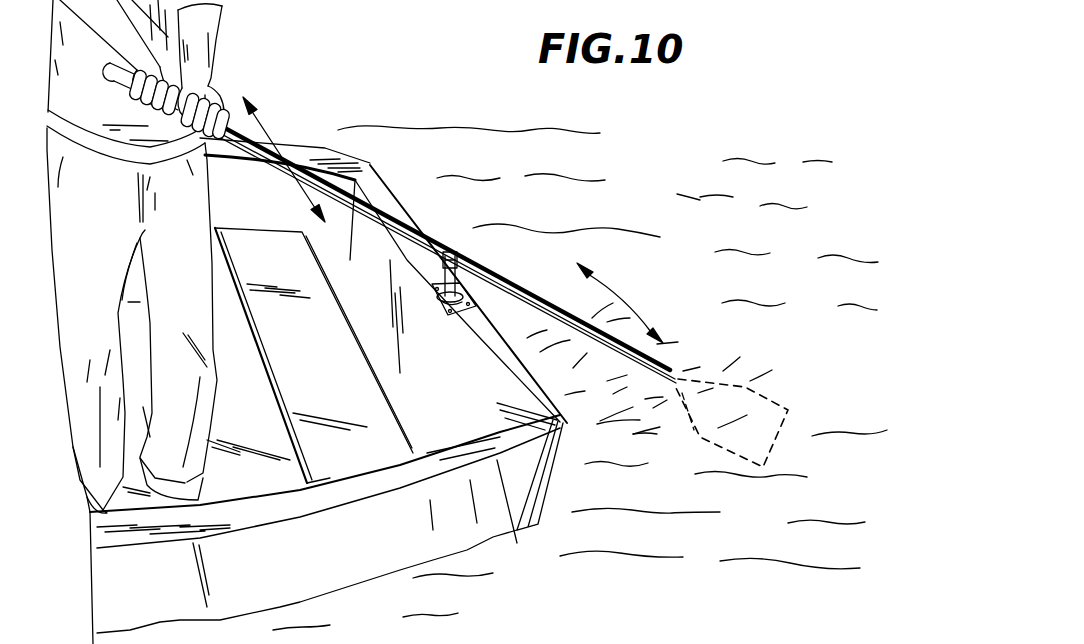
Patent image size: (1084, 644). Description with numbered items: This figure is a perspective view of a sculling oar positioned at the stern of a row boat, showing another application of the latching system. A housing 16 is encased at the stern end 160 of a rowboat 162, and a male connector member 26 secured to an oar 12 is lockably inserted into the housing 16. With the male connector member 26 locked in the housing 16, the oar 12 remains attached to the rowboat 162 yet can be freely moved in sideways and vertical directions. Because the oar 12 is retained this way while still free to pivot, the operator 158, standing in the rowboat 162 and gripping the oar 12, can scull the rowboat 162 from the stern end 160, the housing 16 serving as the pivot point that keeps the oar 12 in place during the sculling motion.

The oar 12 is at (496, 285).
The housing 16 is at (446, 305).
The male connector member 26 is at (434, 276).
The operator 158 is at (216, 58).
The stern end 160 is at (483, 357).
The rowboat 162 is at (516, 490).